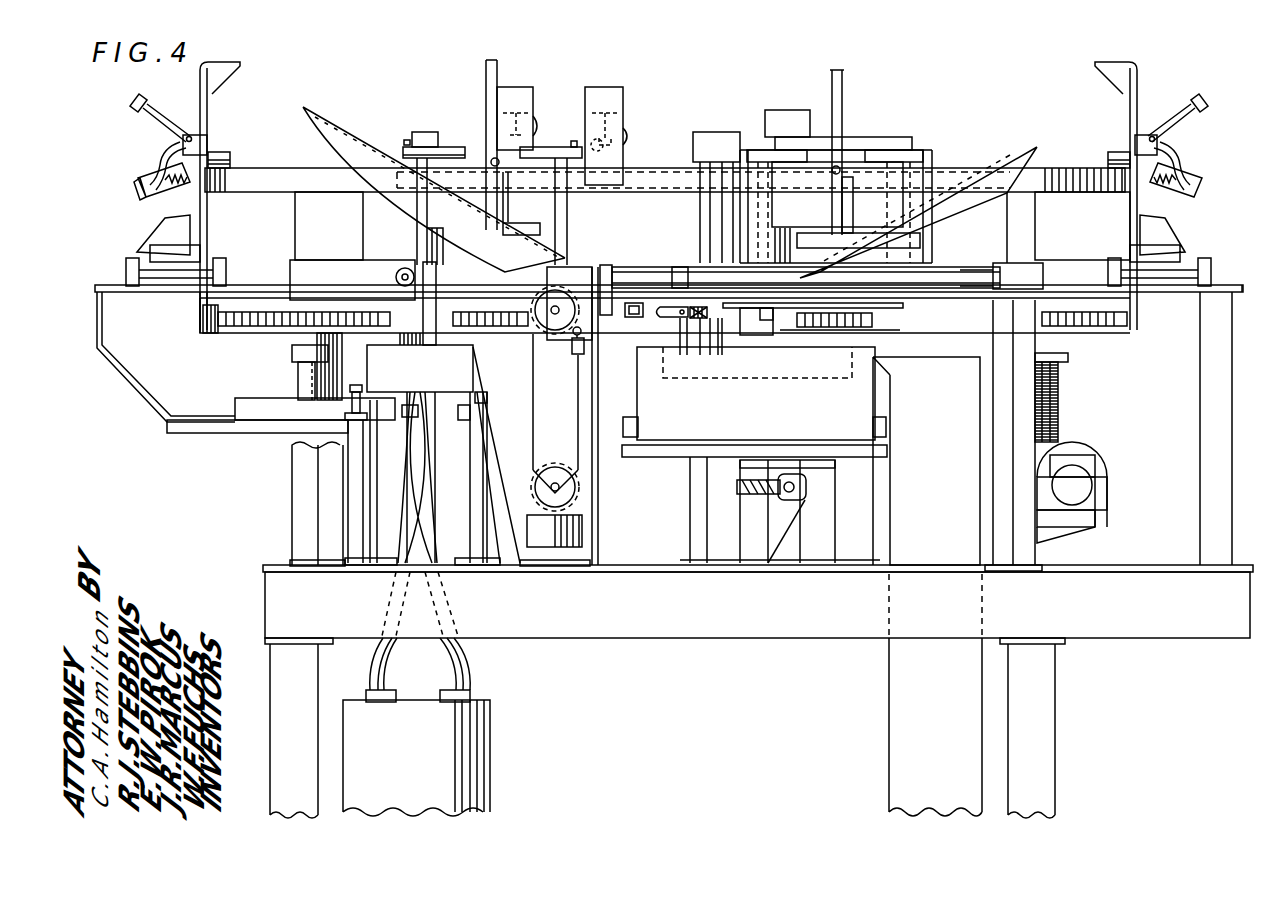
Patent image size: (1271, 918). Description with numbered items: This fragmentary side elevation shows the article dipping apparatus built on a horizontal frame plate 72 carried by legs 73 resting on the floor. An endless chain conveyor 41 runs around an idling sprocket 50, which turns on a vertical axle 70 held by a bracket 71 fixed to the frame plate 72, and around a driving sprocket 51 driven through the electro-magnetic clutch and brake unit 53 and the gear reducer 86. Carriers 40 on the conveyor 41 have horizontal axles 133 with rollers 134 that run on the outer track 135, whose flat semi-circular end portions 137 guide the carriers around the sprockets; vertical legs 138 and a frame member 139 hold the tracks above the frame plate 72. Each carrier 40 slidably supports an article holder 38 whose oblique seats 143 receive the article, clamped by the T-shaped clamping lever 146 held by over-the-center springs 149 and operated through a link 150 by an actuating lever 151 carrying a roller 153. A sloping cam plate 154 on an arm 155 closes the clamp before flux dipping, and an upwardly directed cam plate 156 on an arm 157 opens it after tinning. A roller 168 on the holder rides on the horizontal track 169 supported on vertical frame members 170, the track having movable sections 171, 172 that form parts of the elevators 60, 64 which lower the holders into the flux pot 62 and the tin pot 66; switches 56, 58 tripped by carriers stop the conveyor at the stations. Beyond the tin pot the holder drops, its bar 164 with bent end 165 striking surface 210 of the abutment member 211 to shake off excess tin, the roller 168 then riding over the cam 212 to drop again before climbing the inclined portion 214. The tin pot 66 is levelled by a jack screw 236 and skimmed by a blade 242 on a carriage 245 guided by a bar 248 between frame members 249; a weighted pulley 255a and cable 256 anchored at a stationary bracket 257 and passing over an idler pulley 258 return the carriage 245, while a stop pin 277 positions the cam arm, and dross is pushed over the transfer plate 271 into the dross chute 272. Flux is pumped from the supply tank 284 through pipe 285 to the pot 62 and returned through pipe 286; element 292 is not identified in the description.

The holder 38 is at (182, 218).
The carrier 40 is at (204, 350).
The chain conveyor 41 is at (1084, 322).
The idling sprocket 50 is at (252, 300).
The driving sprocket 51 is at (1100, 340).
The electro-magnetic clutch and brake unit 53 is at (1071, 416).
The switch 56 is at (506, 100).
The switch 58 is at (605, 100).
The elevator 60 is at (435, 128).
The pot 62 is at (453, 375).
The elevator 64 is at (713, 127).
The pot 66 is at (656, 402).
The axle 70 is at (312, 381).
The bracket 71 is at (243, 420).
The frame plate 72 is at (632, 574).
The legs 73 is at (303, 766).
The gear reducer 86 is at (1095, 530).
The axles 133 is at (225, 253).
The rollers 134 is at (128, 259).
The outer track 135 is at (470, 287).
The semi-circular end portions 137 is at (166, 293).
The legs 138 is at (312, 538).
The frame member 139 is at (172, 363).
The seats 143 is at (160, 237).
The clamping lever 146 is at (160, 177).
The over-the-center springs 149 is at (176, 187).
The link 150 is at (158, 142).
The actuating lever 151 is at (185, 103).
The roller 153 is at (150, 109).
The cam plate 154 is at (346, 145).
The arm 155 is at (500, 240).
The cam plate 156 is at (1008, 162).
The arm 157 is at (948, 237).
The bar 164 is at (209, 112).
The bent end portion 165 is at (239, 66).
The roller 168 is at (222, 151).
The track 169 is at (253, 168).
The vertical frame members 170 is at (312, 219).
The movable track section 171 is at (396, 184).
The movable track section 172 is at (748, 184).
The surface 210 is at (783, 120).
The abutment member 211 is at (880, 126).
The cam 212 is at (830, 173).
The inclined portion 214 is at (940, 184).
The jack screw 236 is at (737, 488).
The skimming blade 242 is at (673, 312).
The carriage 245 is at (716, 342).
The bar 248 is at (642, 272).
The frame members 249 is at (604, 267).
The weighted pulley 255a is at (543, 476).
The cable 256 is at (577, 407).
The stationary bracket 257 is at (582, 334).
The idler pulley 258 is at (538, 302).
The transfer plate 271 is at (853, 340).
The dross chute 272 is at (886, 744).
The stop pin 277 is at (676, 283).
The supply tank 284 is at (490, 753).
The pipe 285 is at (474, 671).
The pipe 286 is at (380, 660).
The block 292 is at (672, 325).